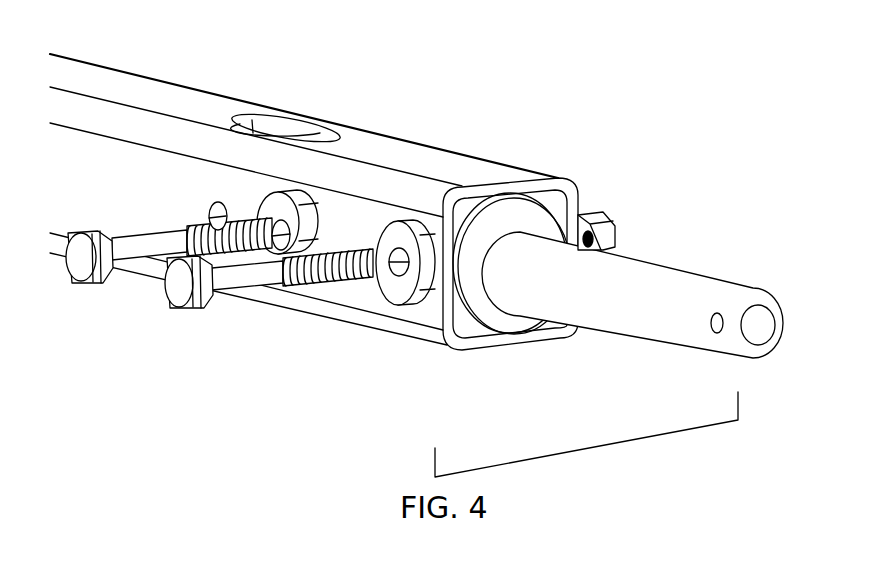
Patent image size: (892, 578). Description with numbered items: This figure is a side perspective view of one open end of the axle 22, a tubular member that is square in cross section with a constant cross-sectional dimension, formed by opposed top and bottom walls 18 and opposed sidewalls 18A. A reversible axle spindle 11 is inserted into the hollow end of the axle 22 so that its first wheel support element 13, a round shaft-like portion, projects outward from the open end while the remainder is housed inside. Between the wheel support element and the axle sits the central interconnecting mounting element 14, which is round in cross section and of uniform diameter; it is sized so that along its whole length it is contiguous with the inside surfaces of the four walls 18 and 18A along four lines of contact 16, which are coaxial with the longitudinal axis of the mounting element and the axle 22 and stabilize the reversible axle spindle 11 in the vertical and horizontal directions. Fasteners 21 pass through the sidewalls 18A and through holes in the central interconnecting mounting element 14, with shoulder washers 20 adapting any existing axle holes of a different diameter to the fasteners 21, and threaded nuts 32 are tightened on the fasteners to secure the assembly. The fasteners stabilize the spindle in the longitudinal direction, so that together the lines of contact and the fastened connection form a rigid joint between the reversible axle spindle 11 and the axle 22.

The reversible axle spindle 11 is at (706, 233).
The first wheel support element 13 is at (685, 288).
The central interconnecting mounting element 14 is at (505, 315).
The lines of contact 16 is at (507, 200).
The top and bottom walls 18 is at (400, 150).
The sidewalls 18A is at (573, 215).
The shoulder washers 20 is at (403, 288).
The fasteners 21 is at (248, 278).
The axle 22 is at (366, 85).
The threaded nuts 32 is at (613, 233).